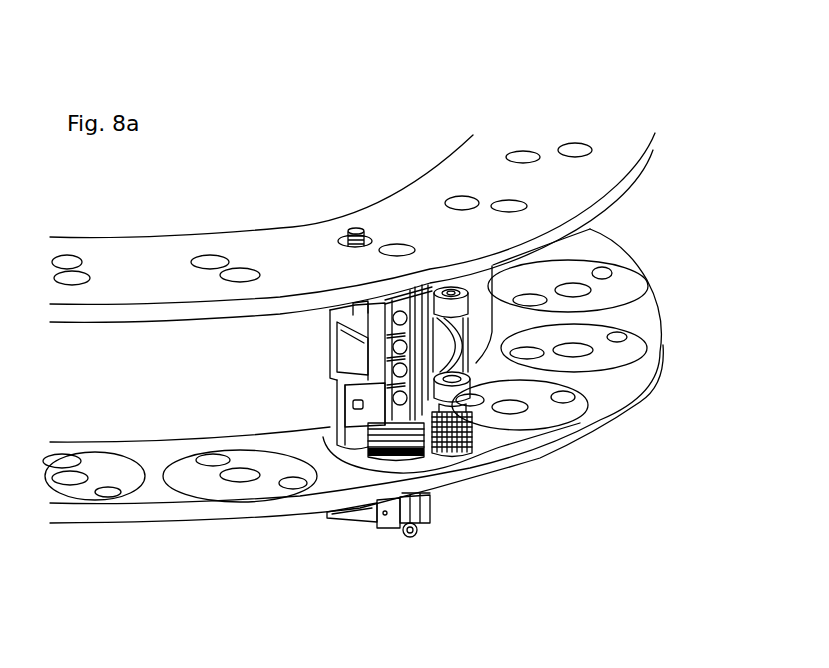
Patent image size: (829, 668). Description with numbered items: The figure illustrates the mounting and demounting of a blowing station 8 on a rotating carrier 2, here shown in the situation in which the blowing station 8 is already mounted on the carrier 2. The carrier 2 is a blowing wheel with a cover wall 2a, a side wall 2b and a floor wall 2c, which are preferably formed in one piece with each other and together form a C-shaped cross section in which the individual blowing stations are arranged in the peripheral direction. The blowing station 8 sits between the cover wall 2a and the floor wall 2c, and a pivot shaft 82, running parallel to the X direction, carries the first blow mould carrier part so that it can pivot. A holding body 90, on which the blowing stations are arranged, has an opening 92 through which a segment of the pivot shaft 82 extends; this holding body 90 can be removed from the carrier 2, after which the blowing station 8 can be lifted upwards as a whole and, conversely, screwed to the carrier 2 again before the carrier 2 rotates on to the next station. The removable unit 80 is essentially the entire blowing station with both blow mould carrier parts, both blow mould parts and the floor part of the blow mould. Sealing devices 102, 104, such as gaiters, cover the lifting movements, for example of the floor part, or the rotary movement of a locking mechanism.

The carrier 2 is at (528, 118).
The cover wall 2a is at (430, 232).
The side wall 2b is at (99, 391).
The floor wall 2c is at (612, 385).
The blowing station 8 is at (318, 377).
The unit 80 is at (476, 339).
The pivot shaft 82 is at (345, 238).
The holding body 90 is at (543, 415).
The opening 92 is at (205, 462).
The sealing device 102 is at (367, 448).
The sealing device 104 is at (447, 450).